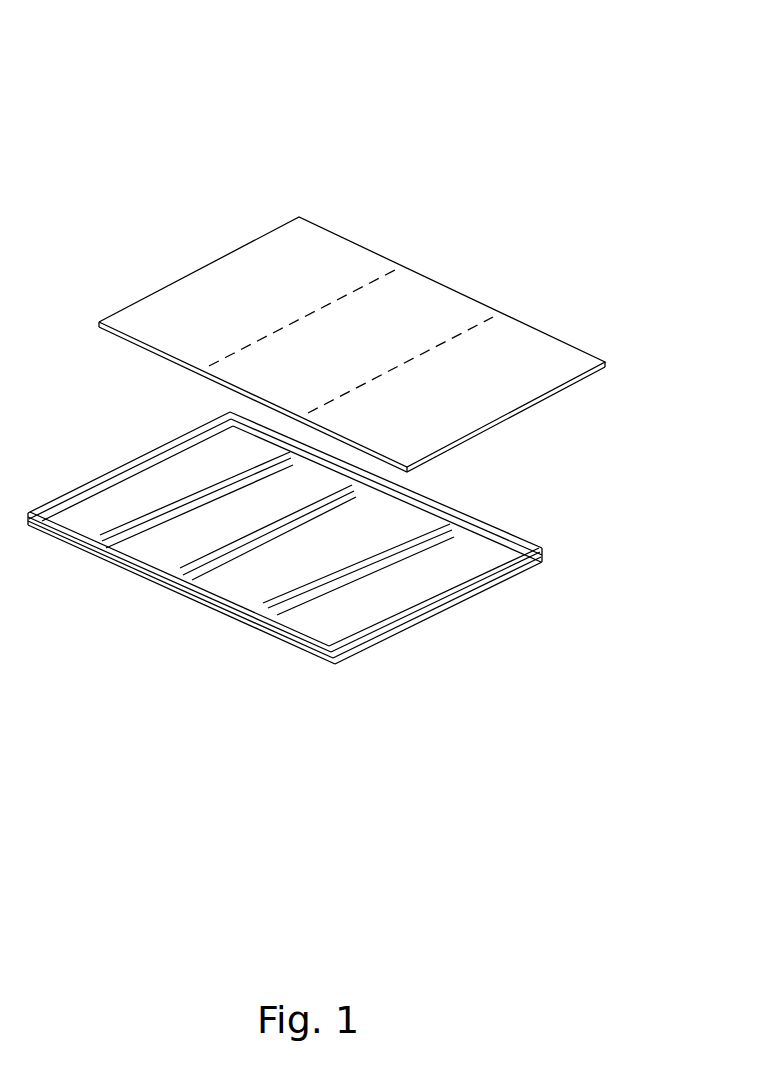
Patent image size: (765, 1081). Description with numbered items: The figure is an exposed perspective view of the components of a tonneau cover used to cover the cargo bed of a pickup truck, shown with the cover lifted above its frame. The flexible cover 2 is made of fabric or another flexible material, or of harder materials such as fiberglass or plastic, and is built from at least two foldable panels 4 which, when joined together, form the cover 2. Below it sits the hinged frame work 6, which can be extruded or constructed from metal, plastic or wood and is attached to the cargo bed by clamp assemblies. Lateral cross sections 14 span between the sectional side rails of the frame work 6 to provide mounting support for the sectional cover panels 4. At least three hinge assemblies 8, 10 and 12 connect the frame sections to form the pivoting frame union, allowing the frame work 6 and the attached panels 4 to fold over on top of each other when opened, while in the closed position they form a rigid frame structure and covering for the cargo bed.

The flexible cover 2 is at (492, 408).
The foldable panels 4 is at (500, 313).
The hinged frame work 6 is at (512, 540).
The hinge assembly 8 is at (100, 563).
The hinge assembly 10 is at (175, 598).
The hinge assembly 12 is at (260, 640).
The lateral cross sections 14 is at (411, 547).